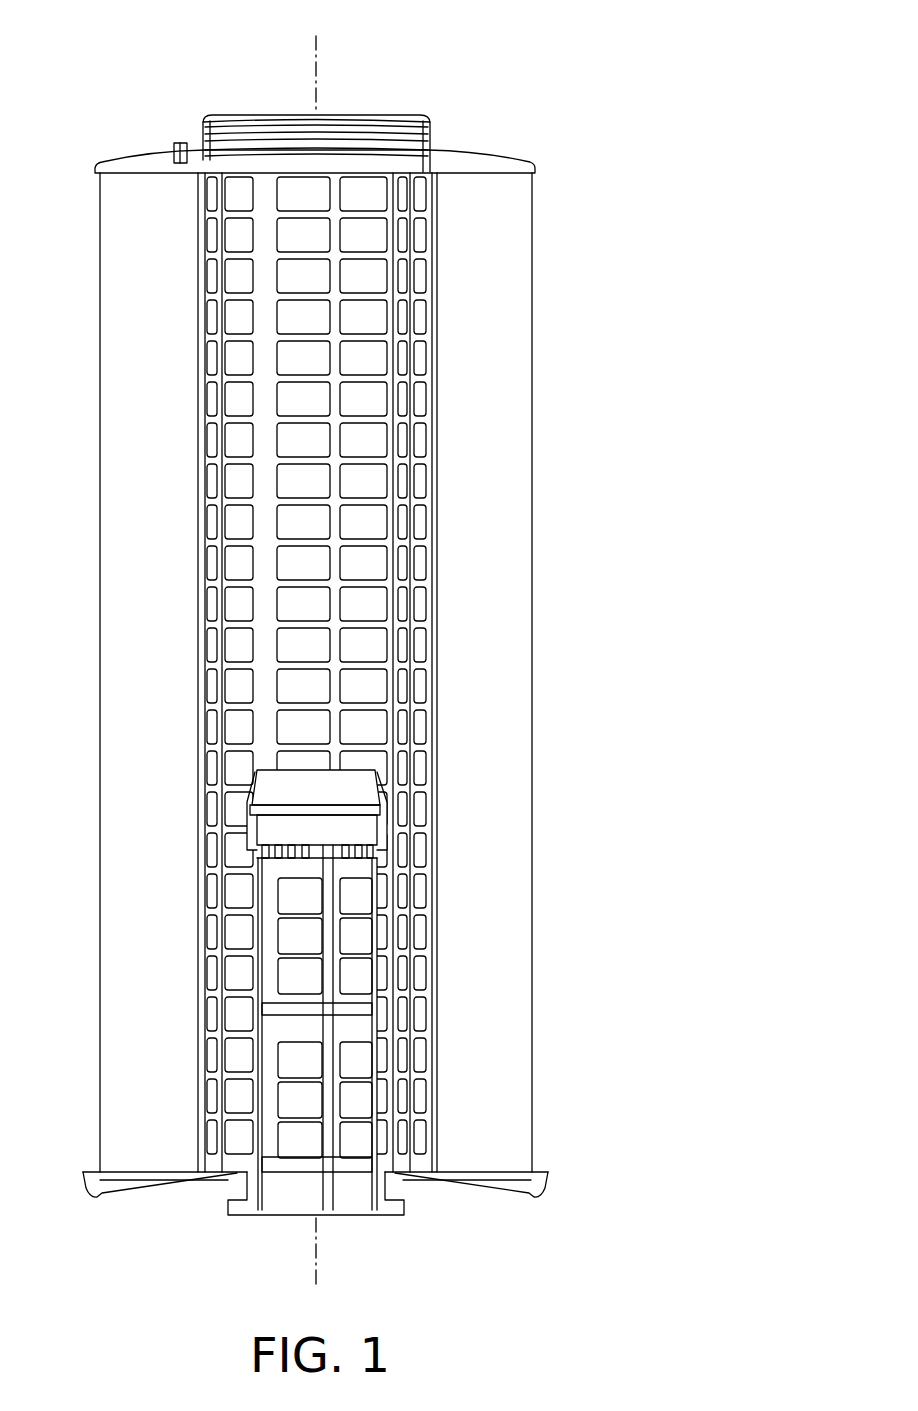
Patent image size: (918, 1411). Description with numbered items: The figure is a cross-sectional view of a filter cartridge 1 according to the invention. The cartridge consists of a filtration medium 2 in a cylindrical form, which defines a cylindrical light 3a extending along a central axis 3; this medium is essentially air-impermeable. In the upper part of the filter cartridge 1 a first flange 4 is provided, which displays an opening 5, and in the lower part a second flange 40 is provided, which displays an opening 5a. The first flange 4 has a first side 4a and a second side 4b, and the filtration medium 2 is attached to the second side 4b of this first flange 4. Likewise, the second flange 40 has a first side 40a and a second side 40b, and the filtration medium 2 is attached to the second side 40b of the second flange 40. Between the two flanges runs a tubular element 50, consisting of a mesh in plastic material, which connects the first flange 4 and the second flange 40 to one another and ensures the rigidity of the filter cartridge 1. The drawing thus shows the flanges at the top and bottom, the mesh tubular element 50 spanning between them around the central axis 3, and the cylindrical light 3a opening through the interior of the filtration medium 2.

The filter cartridge 1 is at (463, 72).
The filtration medium 2 is at (488, 691).
The central axis 3 is at (315, 645).
The cylindrical light 3a is at (319, 289).
The first flange 4 is at (339, 187).
The first side 4a is at (492, 151).
The second side 4b is at (468, 176).
The opening 5 is at (324, 669).
The opening 5a is at (245, 1178).
The second flange 40 is at (334, 1182).
The first side 40a is at (447, 1180).
The second side 40b is at (495, 1170).
The tubular element 50 is at (360, 415).